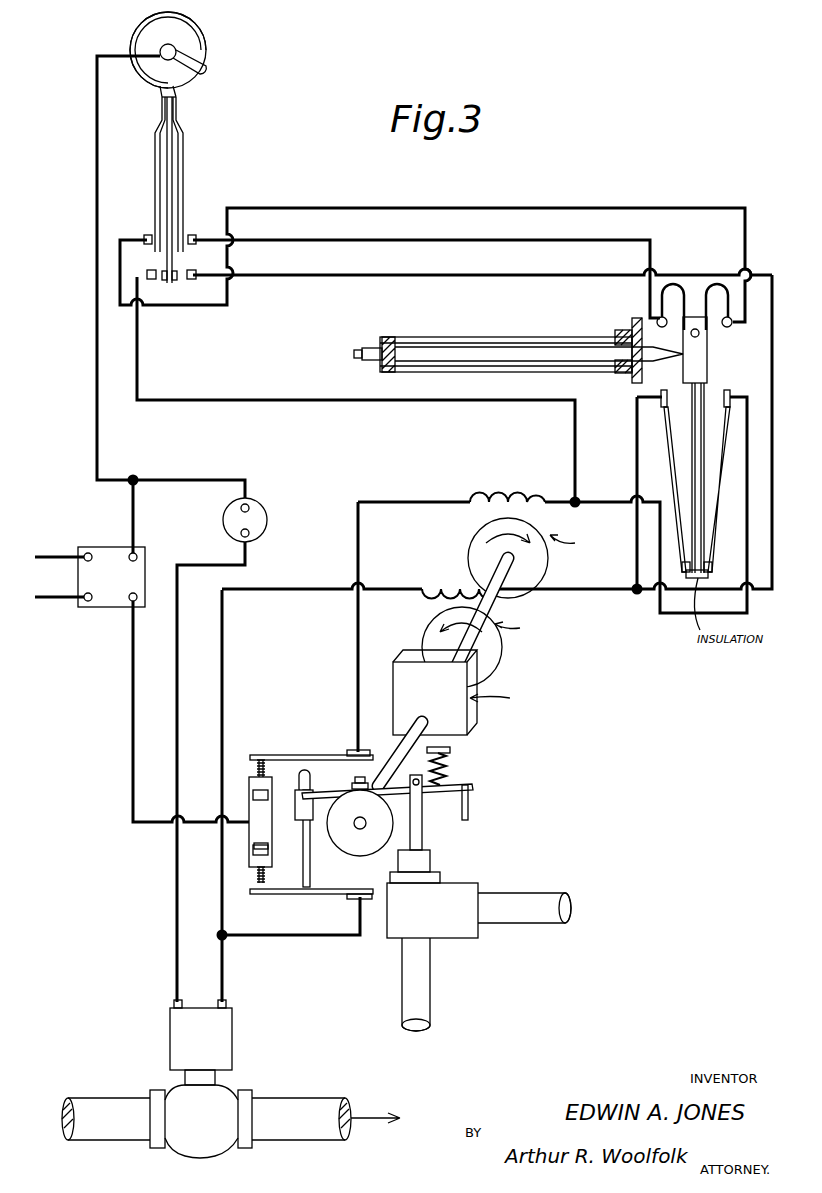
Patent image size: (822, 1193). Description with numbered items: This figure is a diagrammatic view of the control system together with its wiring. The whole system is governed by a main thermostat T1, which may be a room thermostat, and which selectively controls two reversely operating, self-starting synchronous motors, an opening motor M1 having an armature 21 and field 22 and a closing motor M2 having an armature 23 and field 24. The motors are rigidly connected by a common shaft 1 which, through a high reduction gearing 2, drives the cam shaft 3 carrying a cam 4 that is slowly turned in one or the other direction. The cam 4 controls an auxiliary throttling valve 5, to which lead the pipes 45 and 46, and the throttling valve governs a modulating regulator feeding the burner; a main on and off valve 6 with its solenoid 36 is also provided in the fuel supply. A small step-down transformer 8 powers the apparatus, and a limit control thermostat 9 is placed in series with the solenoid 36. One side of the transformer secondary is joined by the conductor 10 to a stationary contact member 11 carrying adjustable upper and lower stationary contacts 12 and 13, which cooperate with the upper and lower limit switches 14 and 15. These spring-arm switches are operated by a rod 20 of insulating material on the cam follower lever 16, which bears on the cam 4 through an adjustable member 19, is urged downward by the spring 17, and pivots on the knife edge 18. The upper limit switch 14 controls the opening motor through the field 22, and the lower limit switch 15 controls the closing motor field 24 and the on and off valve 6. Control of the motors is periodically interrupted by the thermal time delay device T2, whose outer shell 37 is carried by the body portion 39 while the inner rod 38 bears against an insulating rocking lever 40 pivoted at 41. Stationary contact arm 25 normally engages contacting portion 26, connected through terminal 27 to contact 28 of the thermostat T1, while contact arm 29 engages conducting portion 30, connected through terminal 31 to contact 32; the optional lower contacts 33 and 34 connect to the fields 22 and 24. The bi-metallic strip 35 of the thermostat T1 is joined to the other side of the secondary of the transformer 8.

The common shaft 1 is at (493, 604).
The high reduction gearing 2 is at (468, 738).
The cam shaft 3 is at (390, 756).
The cam 4 is at (352, 853).
The auxiliary throttling valve 5 is at (456, 875).
The main on and off valve 6 is at (246, 1074).
The step-down transformer 8 is at (90, 608).
The limit control thermostat 9 is at (264, 514).
The conductor 10 is at (132, 732).
The stationary contact member 11 is at (248, 805).
The upper stationary contact 12 is at (250, 770).
The lower stationary contact 13 is at (270, 873).
The upper limit switch 14 is at (330, 742).
The lower limit switch 15 is at (322, 895).
The cam follower lever 16 is at (422, 795).
The spring 17 is at (450, 770).
The knife edge 18 is at (470, 798).
The adjustable member 19 is at (352, 778).
The rod 20 is at (302, 866).
The armature 21 is at (470, 556).
The field 22 is at (508, 490).
The armature 23 is at (422, 638).
The field 24 is at (436, 586).
The relatively stationary contact arm 25 is at (722, 483).
The contacting portion 26 is at (708, 410).
The terminal 27 is at (732, 326).
The contact 28 is at (147, 233).
The relatively stationary contact arm 29 is at (672, 452).
The conducting portion 30 is at (690, 395).
The terminal 31 is at (666, 333).
The contact 32 is at (192, 233).
The lower contact 33 is at (150, 281).
The lower contact 34 is at (191, 281).
The bi-metallic strip 35 is at (146, 88).
The solenoid 36 is at (170, 1038).
The outer shell 37 is at (435, 338).
The inner rod 38 is at (478, 350).
The body portion 39 is at (630, 385).
The rocking lever 40 is at (692, 316).
The pivot 41 is at (699, 335).
The pipe 45 is at (432, 1010).
The pipe 46 is at (533, 923).
The main thermostat T1 is at (212, 96).
The thermal time delay device T2 is at (552, 326).
The opening motor M1 is at (468, 533).
The closing motor M2 is at (423, 619).